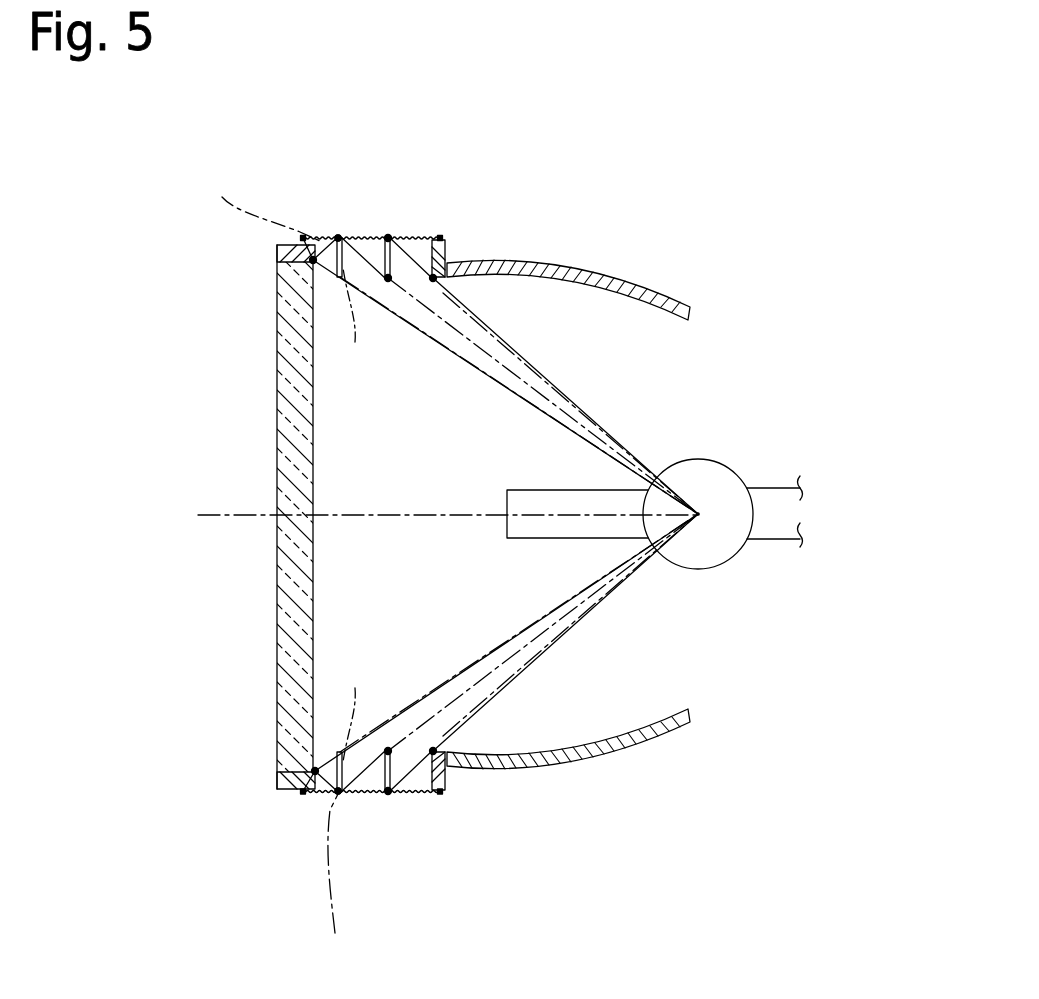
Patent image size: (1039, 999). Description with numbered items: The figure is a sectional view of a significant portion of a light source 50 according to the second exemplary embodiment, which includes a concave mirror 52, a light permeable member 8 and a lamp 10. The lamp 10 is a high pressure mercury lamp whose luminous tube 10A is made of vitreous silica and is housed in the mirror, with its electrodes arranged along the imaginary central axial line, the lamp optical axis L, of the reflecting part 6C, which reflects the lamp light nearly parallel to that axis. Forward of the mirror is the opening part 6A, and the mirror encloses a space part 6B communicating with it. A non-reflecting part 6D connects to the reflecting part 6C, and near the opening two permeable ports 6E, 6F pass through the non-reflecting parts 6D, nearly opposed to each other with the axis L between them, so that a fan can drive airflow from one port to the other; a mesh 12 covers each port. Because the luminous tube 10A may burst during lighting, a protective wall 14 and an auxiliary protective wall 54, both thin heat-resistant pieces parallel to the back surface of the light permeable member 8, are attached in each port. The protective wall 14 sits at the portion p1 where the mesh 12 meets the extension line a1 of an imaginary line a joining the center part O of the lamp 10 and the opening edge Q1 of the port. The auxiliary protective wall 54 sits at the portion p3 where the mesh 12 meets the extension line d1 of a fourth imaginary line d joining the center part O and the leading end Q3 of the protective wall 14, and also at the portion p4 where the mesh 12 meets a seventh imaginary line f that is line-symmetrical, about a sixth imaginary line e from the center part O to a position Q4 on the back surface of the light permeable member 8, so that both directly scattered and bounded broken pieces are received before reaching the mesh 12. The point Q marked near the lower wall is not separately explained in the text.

The light source 50 is at (687, 147).
The concave mirror 52 is at (690, 270).
The auxiliary protective wall 54 is at (284, 256).
The mesh 12 is at (365, 237).
The protective wall 14 is at (387, 282).
The opening part 6A is at (332, 400).
The space part 6B is at (575, 715).
The reflecting part 6C is at (572, 266).
The non-reflecting part 6D is at (448, 262).
The permeable port 6E is at (425, 268).
The permeable port 6F is at (410, 795).
The light permeable member 8 is at (280, 590).
The lamp 10 is at (732, 460).
The luminous tube 10A is at (768, 488).
The lamp optical axis L is at (247, 517).
The center part O is at (698, 515).
The point Q is at (298, 794).
The opening edge Q1 is at (434, 281).
The leading end Q3 is at (386, 282).
The position Q4 is at (313, 258).
The portion p1 is at (388, 236).
The portion p3 is at (337, 237).
The portion p4 is at (338, 514).
The seventh imaginary line f is at (275, 565).
The imaginary line a is at (535, 365).
The extension line a1 is at (441, 347).
The fourth imaginary line d is at (533, 407).
The extension line d1 is at (350, 515).
The sixth imaginary line e is at (492, 380).